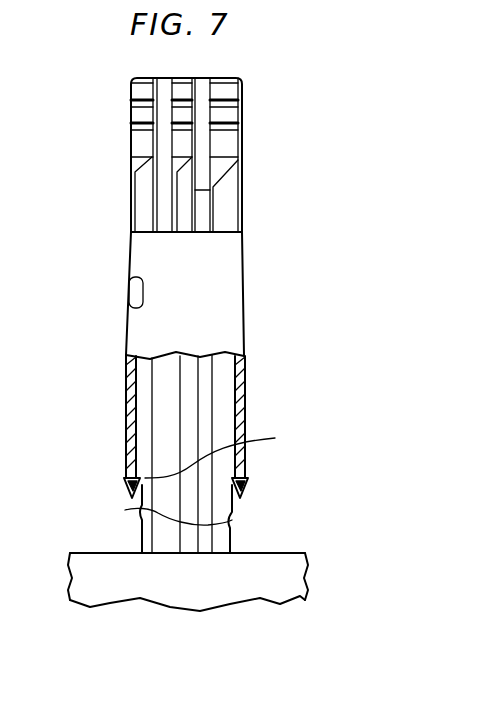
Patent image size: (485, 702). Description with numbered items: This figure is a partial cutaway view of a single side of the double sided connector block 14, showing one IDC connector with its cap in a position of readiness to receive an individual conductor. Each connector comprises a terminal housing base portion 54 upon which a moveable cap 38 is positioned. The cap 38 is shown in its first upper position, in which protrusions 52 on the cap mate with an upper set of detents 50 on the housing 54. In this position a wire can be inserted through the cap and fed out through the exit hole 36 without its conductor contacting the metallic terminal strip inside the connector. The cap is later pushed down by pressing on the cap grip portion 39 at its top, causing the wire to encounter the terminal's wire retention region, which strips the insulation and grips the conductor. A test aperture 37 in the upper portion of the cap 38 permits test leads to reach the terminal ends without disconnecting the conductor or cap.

The double sided connector block 14 is at (308, 560).
The exit hole 36 is at (128, 292).
The test aperture 37 is at (203, 208).
The moveable cap 38 is at (236, 290).
The cap grip portion 39 is at (233, 90).
The detents 50 is at (230, 476).
The protrusions 52 is at (128, 488).
The terminal housing base portion 54 is at (190, 387).